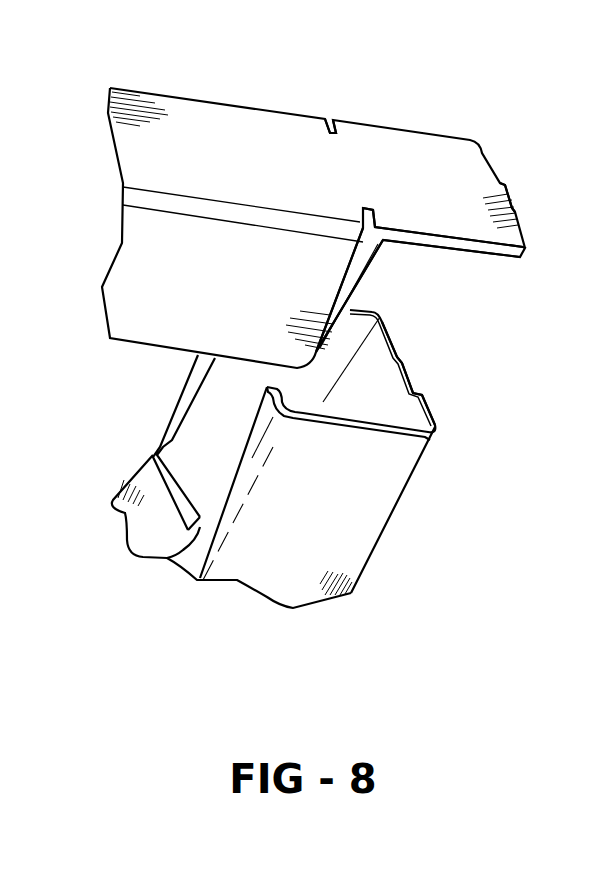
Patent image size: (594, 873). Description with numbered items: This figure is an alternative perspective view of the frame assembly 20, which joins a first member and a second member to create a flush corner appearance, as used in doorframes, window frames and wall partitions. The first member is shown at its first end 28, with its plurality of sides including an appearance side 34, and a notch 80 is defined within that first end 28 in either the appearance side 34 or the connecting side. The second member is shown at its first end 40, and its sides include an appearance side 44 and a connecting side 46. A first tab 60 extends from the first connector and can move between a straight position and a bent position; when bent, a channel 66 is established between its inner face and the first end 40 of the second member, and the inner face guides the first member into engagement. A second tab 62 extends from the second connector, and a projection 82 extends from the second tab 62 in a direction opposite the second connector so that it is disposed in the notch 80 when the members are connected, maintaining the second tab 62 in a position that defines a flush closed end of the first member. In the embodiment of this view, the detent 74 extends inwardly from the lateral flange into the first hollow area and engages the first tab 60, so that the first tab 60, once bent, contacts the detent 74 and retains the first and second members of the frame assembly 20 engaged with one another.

The frame assembly 20 is at (476, 113).
The first end 28 is at (435, 440).
The appearance side 34 is at (317, 490).
The first end 40 is at (319, 114).
The appearance side 44 is at (236, 305).
The connecting side 46 is at (291, 167).
The first tab 60 is at (387, 258).
The second tab 62 is at (430, 190).
The channel 66 is at (364, 279).
The detent 74 is at (160, 440).
The notch 80 is at (407, 378).
The projection 82 is at (507, 187).